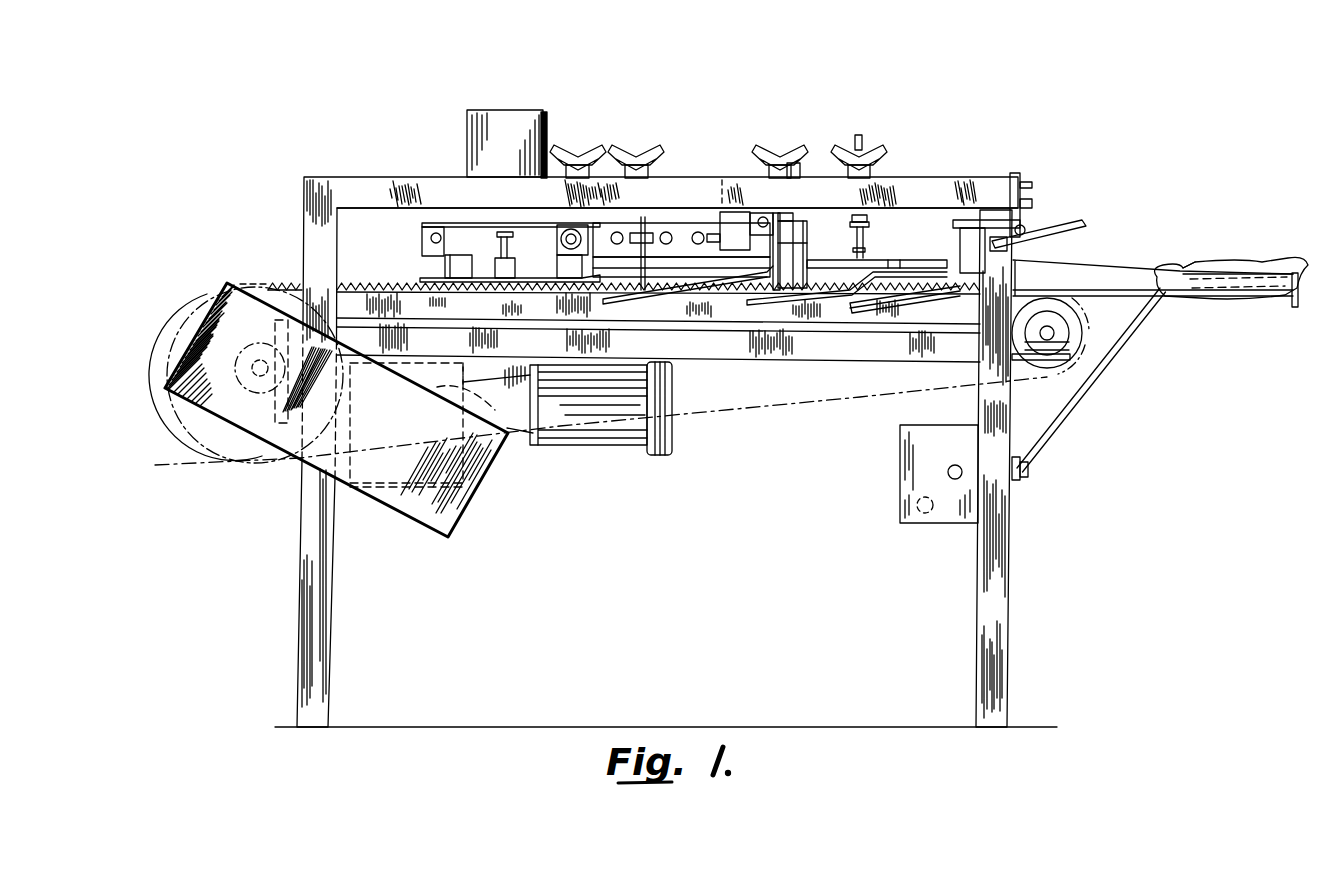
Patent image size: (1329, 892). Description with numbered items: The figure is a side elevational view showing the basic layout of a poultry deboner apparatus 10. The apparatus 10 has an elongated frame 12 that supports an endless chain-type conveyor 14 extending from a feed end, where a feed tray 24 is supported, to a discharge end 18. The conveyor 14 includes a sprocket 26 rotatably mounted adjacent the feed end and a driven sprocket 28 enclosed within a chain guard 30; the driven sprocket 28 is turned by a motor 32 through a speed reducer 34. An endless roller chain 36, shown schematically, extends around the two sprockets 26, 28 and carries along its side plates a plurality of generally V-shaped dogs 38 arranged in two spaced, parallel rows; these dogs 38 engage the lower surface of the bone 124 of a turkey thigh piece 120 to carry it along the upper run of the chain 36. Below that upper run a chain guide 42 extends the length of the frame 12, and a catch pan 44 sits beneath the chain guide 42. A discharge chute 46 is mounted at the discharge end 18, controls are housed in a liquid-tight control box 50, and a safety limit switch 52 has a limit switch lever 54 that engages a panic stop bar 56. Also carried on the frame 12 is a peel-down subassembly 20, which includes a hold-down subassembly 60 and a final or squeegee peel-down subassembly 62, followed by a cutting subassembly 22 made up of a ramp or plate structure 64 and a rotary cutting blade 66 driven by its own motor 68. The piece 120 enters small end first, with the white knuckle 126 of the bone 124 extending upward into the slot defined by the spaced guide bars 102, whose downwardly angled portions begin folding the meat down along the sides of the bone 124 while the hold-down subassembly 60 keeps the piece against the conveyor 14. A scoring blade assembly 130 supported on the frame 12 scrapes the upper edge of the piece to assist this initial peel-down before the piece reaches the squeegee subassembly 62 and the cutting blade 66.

The deboner apparatus 10 is at (996, 120).
The elongated frame 12 is at (1030, 500).
The conveyor 14 is at (266, 264).
The discharge end 18 is at (224, 268).
The peel-down subassembly 20 is at (772, 136).
The cutting subassembly 22 is at (462, 255).
The feed tray 24 is at (1264, 255).
The sprocket 26 is at (1087, 352).
The driven sprocket 28 is at (227, 432).
The chain guard 30 is at (212, 355).
The motor 32 is at (654, 391).
The speed reducer 34 is at (500, 449).
The endless roller chain 36 is at (748, 406).
The V-shaped dogs 38 is at (376, 282).
The chain guide 42 is at (532, 307).
The catch pan 44 is at (732, 354).
The discharge chute 46 is at (441, 515).
The control box 50 is at (941, 523).
The safety limit switch 52 is at (952, 240).
The limit switch lever 54 is at (995, 210).
The panic stop bar 56 is at (1070, 224).
The hold-down subassembly 60 is at (880, 222).
The finish peel-down or squeegee subassembly 62 is at (681, 218).
The ramp or plate structure 64 is at (423, 263).
The rotary cutting blade 66 is at (472, 268).
The motor 68 is at (498, 140).
The guide bar 102 is at (912, 300).
The turkey thigh piece 120 is at (1233, 265).
The bone 124 is at (1183, 280).
The white knuckle 126 is at (1190, 268).
The scoring blade assembly 130 is at (801, 148).